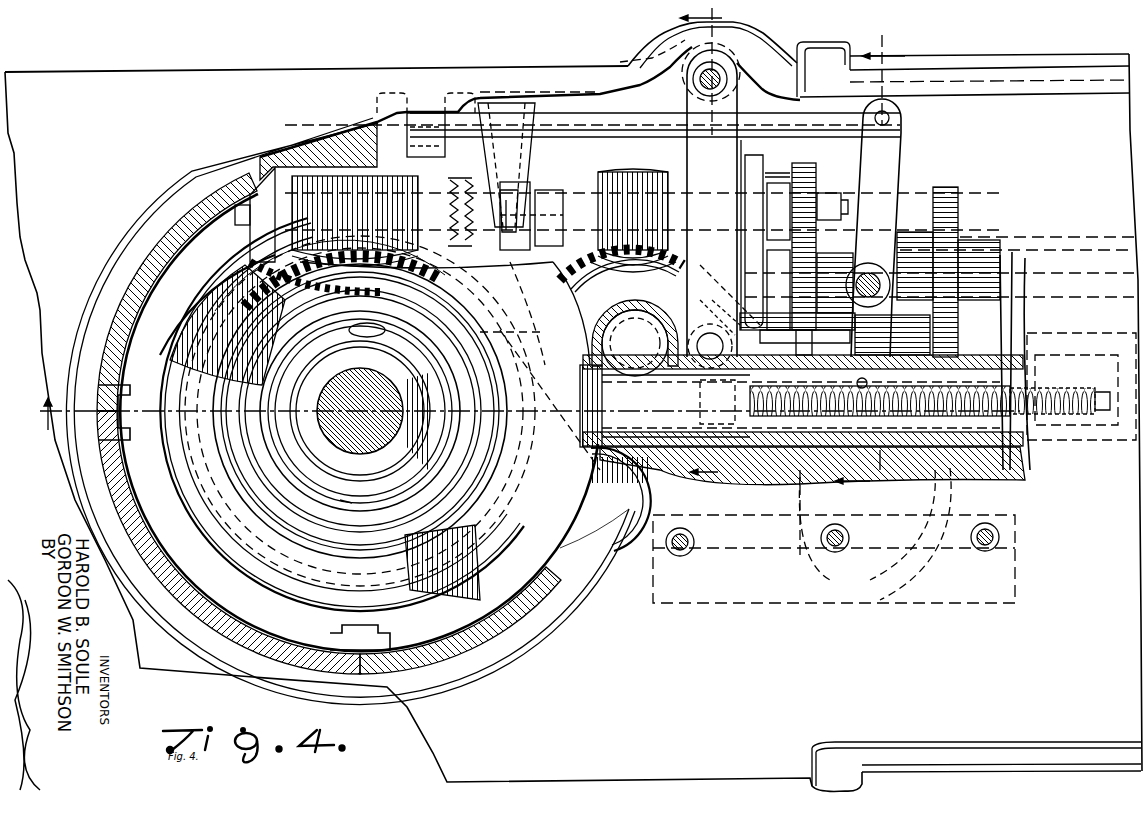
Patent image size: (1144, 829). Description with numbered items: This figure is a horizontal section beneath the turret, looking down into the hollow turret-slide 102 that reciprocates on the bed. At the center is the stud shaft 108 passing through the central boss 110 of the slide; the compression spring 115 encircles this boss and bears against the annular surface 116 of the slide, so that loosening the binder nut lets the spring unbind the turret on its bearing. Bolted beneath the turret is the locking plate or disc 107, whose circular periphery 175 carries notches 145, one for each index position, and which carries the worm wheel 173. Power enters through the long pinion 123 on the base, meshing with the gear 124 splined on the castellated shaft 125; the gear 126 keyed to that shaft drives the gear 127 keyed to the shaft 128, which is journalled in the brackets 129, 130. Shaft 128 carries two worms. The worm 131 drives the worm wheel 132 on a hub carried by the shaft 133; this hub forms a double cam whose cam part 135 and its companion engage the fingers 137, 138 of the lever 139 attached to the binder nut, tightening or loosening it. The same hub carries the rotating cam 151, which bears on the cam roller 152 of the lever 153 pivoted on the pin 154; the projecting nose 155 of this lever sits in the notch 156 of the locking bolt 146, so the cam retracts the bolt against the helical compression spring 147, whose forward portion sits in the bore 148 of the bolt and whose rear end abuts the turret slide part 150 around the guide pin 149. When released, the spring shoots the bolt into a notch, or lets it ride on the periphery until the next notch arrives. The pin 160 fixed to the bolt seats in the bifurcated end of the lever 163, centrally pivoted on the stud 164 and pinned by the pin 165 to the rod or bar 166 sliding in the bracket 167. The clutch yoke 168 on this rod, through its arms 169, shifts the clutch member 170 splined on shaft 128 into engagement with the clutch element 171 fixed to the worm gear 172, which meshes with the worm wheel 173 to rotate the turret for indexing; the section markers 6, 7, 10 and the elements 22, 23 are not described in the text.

The section line 6 is at (708, 249).
The section line 7 is at (518, 414).
The section line 10 is at (852, 297).
The bolt 22 is at (955, 500).
The mounting plate 23 is at (1016, 585).
The turret-slide 102 is at (683, 75).
The locking plate or disc 107 is at (537, 562).
The stud shaft 108 is at (375, 378).
The central boss 110 is at (360, 399).
The compression spring 115 is at (382, 332).
The annular surface 116 is at (352, 505).
The long pinion 123 is at (926, 328).
The gear 124 is at (958, 215).
The castellated shaft 125 is at (912, 264).
The gear 126 is at (818, 232).
The gear 127 is at (815, 176).
The shaft 128 is at (578, 195).
The bracket 129 is at (243, 172).
The bracket 130 is at (773, 160).
The worm 131 is at (633, 180).
The worm wheel 132 is at (612, 256).
The shaft 133 is at (625, 398).
The cam part 135 is at (712, 268).
The finger 137 is at (621, 499).
The finger 138 is at (570, 333).
The lever 139 is at (512, 323).
The notches 145 is at (515, 424).
The locking bolt 146 is at (903, 466).
The helical compression spring 147 is at (1080, 395).
The bore 148 is at (800, 408).
The guide pin 149 is at (1100, 385).
The turret slide part 150 is at (1095, 374).
The rotating cam 151 is at (728, 312).
The cam roller 152 is at (720, 328).
The lever 153 is at (748, 60).
The pin 154 is at (720, 68).
The projecting nose 155 is at (728, 458).
The notch 156 is at (772, 412).
The pin 160 is at (895, 383).
The lever 163 is at (890, 160).
The stud 164 is at (872, 302).
The pin 165 is at (900, 118).
The rod or bar 166 is at (620, 120).
The bracket 167 is at (418, 110).
The clutch yoke 168 is at (517, 84).
The arms 169 is at (517, 182).
The clutch member 170 is at (476, 244).
The clutch element 171 is at (450, 185).
The worm gear 172 is at (300, 232).
The worm wheel 173 is at (222, 265).
The circular periphery 175 is at (612, 560).